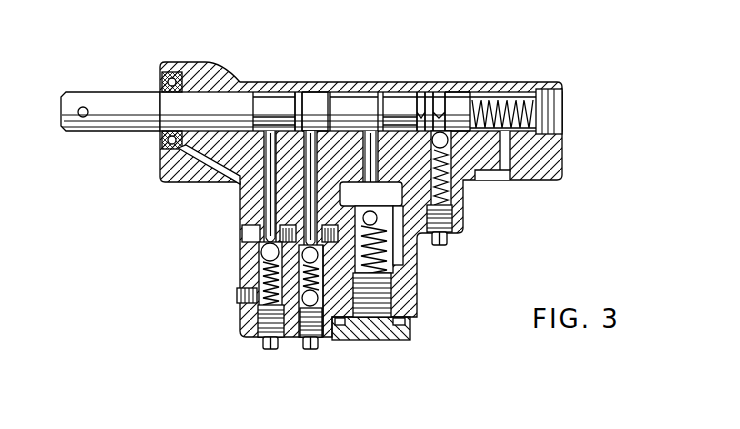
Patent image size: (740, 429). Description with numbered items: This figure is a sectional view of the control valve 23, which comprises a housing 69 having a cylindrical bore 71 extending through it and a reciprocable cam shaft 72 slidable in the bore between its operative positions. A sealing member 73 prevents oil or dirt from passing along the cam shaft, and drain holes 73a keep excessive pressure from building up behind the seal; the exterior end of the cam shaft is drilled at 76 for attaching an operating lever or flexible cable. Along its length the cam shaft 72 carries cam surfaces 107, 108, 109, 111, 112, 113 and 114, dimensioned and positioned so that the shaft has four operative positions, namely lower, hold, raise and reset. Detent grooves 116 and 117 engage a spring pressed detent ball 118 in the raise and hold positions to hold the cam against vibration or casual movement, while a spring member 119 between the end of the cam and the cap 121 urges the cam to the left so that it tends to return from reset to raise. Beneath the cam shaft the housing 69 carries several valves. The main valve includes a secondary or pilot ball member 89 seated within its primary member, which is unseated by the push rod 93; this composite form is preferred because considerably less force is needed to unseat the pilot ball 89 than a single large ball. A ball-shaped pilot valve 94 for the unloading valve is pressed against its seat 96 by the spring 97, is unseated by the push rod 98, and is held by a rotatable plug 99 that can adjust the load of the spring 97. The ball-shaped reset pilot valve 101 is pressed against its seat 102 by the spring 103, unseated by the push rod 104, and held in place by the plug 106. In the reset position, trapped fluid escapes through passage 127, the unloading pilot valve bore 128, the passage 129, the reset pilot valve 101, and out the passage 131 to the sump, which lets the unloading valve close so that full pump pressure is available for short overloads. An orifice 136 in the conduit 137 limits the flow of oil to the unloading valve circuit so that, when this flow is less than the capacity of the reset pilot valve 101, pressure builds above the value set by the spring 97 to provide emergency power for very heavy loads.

The control valve 23 is at (598, 81).
The housing 69 is at (562, 177).
The cylindrical bore 71 is at (480, 100).
The reciprocable cam shaft 72 is at (112, 100).
The sealing member 73 is at (163, 80).
The drain holes 73a is at (160, 163).
The drilled hole 76 is at (83, 107).
The secondary or pilot ball member 89 is at (388, 232).
The push rod 93 is at (377, 213).
The ball-shaped pilot valve 94 is at (262, 308).
The seat 96 is at (264, 284).
The spring 97 is at (302, 304).
The push rod 98 is at (306, 202).
The rotatable plug 99 is at (313, 352).
The reset pilot valve 101 is at (262, 258).
The seat 102 is at (262, 250).
The spring 103 is at (258, 268).
The push rod 104 is at (247, 192).
The plug 106 is at (268, 352).
The cam surface 107 is at (250, 92).
The cam surface 108 is at (268, 100).
The cam surface 109 is at (297, 95).
The cam surface 111 is at (319, 100).
The cam surface 112 is at (354, 100).
The cam surface 113 is at (379, 102).
The cam surface 114 is at (414, 95).
The detent groove 116 is at (430, 97).
The detent groove 117 is at (448, 97).
The spring pressed detent ball 118 is at (444, 146).
The spring member 119 is at (520, 100).
The cap 121 is at (562, 108).
The passage 127 is at (328, 337).
The unloading pilot valve bore 128 is at (307, 338).
The passage 129 is at (262, 330).
The passage 131 is at (252, 233).
The orifice 136 is at (356, 341).
The conduit 137 is at (338, 327).